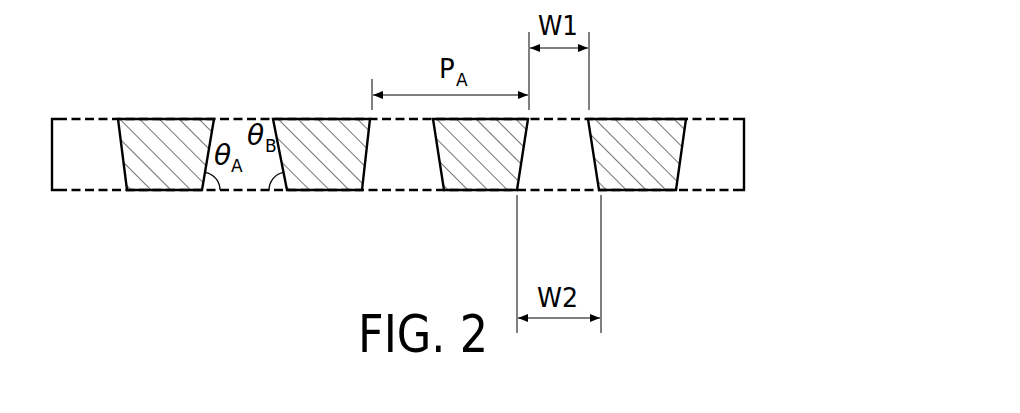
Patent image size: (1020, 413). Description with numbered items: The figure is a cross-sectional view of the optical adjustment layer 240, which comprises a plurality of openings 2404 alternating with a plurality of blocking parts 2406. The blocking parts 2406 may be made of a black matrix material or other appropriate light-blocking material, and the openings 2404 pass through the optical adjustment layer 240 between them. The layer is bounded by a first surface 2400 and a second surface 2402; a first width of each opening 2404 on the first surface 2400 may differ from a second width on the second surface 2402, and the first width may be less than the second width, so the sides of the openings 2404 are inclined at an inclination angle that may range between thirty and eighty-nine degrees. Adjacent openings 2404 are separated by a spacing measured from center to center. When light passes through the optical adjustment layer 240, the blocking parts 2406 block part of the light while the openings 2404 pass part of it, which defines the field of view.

The optical adjustment layer 240 is at (745, 150).
The first surface 2400 is at (228, 118).
The second surface 2402 is at (258, 192).
The openings 2404 is at (85, 190).
The blocking parts 2406 is at (168, 150).